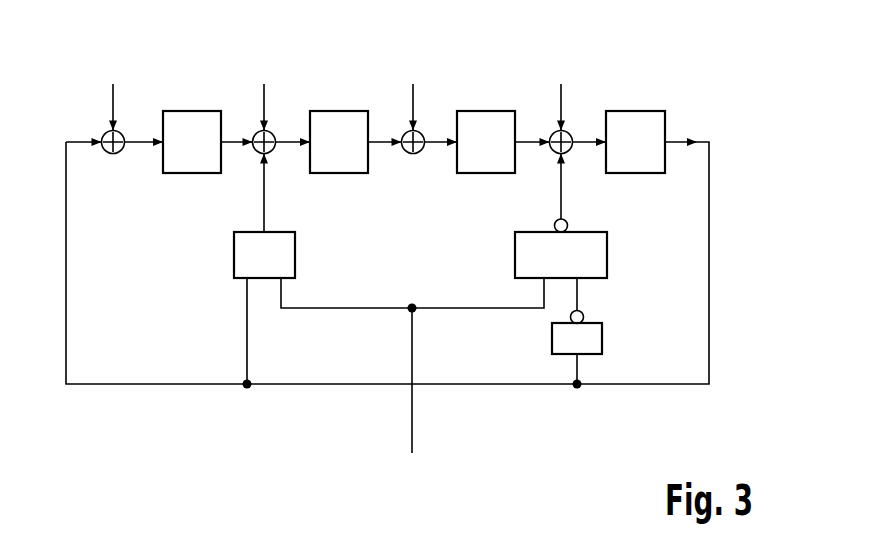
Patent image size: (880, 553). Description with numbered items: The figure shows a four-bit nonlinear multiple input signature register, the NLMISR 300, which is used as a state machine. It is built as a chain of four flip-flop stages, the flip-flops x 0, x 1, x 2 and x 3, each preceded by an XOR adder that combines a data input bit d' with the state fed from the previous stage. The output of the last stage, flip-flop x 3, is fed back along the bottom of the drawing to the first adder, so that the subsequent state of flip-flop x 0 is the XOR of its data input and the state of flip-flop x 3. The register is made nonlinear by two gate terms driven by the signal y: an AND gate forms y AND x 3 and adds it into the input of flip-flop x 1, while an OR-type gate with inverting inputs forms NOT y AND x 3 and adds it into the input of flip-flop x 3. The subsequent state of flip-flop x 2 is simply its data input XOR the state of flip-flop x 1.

The four-bit NLMISR 300 is at (420, 226).
The flip-flop x^ 0 is at (192, 142).
The flip-flop x^ 1 is at (339, 142).
The flip-flop x^ 2 is at (486, 142).
The flip-flop x^ 3 is at (635, 142).